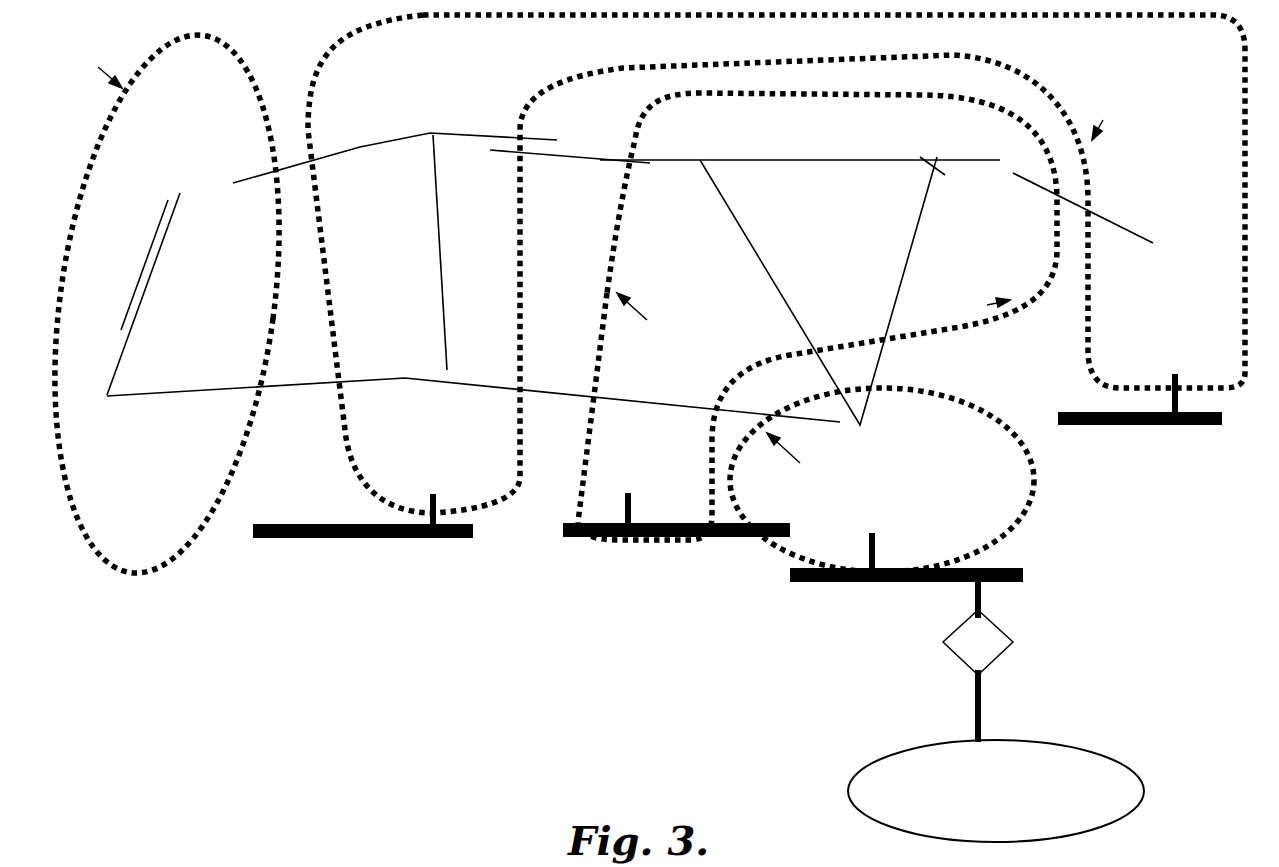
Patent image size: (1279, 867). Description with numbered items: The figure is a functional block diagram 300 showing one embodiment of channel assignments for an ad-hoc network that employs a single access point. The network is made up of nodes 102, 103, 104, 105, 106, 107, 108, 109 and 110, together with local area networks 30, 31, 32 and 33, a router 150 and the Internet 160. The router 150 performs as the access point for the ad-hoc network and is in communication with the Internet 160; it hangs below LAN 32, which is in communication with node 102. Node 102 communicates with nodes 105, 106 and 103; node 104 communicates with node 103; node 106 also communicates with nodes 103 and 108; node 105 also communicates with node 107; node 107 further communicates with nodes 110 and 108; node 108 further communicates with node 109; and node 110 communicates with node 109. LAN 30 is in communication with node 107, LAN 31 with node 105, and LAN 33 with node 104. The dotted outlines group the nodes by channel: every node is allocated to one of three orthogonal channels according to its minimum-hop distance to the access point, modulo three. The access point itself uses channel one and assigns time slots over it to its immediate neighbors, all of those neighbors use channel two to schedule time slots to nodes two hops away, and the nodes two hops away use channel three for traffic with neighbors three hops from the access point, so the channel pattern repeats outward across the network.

The LAN 30 is at (411, 549).
The LAN 31 is at (723, 551).
The LAN 32 is at (905, 593).
The LAN 33 is at (1185, 438).
The node 102 is at (899, 492).
The node 103 is at (973, 282).
The node 104 is at (1141, 333).
The node 105 is at (668, 451).
The node 106 is at (705, 266).
The node 107 is at (406, 456).
The node 108 is at (374, 269).
The node 109 is at (193, 311).
The node 110 is at (159, 464).
The router 150 is at (930, 658).
The Internet 160 is at (1066, 729).
The channel assignment diagram 300 is at (537, 670).